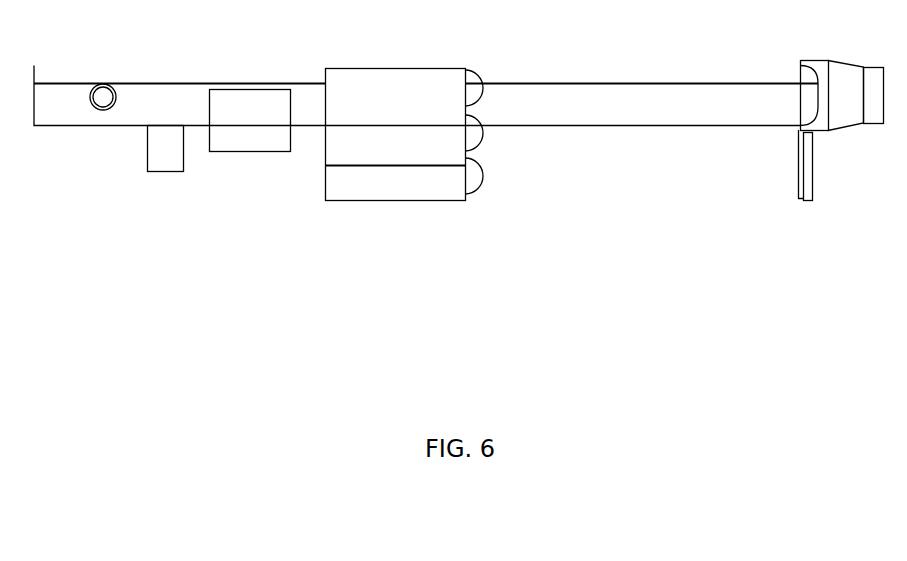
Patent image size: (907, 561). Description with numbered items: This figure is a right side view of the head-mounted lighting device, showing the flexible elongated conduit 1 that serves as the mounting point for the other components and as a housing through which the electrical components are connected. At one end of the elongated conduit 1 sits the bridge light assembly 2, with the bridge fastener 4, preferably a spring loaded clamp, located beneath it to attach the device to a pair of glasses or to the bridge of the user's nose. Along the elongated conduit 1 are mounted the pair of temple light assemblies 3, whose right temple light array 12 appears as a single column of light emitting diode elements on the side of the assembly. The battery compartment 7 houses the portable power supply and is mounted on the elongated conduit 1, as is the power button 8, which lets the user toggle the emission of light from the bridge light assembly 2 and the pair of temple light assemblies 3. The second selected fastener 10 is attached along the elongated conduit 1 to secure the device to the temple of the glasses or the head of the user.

The elongated conduit 1 is at (603, 73).
The bridge light assembly 2 is at (838, 73).
The pair of temple light assemblies 3 is at (406, 191).
The bridge fastener 4 is at (800, 198).
The battery compartment 7 is at (257, 145).
The power button 8 is at (98, 95).
The second selected fastener 10 is at (163, 161).
The right temple light array 12 is at (477, 183).